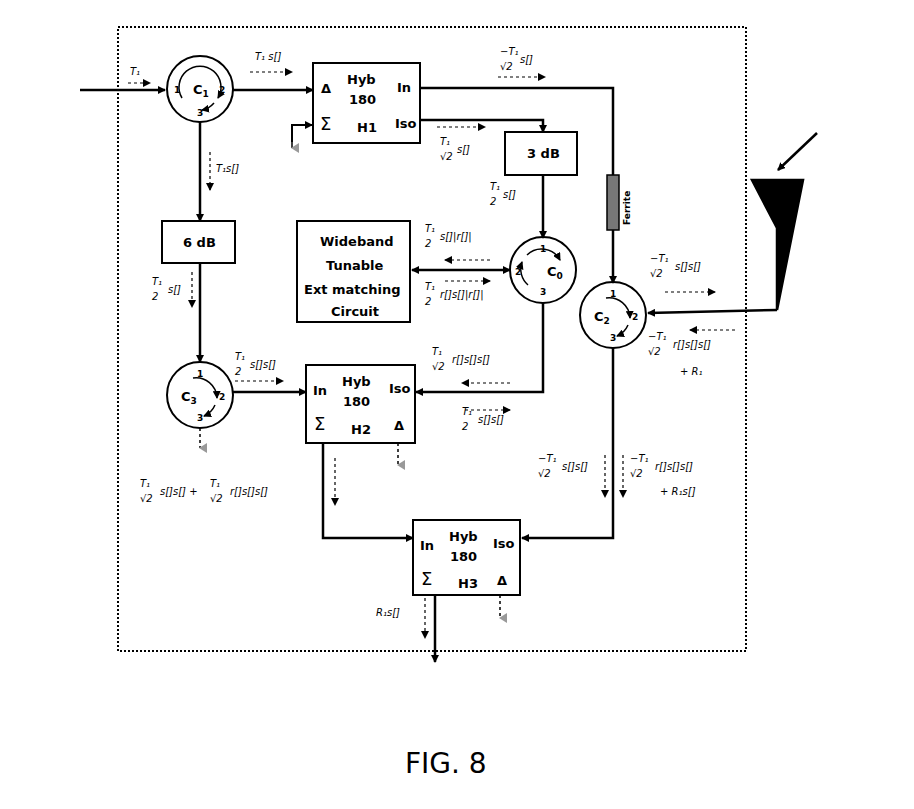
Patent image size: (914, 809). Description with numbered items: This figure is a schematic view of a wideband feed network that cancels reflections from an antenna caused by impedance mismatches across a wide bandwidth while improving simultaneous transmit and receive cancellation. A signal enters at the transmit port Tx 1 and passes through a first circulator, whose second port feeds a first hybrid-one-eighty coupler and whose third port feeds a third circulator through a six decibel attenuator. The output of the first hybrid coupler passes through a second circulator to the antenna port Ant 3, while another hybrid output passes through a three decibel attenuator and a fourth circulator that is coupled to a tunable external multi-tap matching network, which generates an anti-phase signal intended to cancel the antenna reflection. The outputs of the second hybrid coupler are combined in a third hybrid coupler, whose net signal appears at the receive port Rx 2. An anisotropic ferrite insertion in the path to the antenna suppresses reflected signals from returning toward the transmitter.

The Tx port 1 is at (91, 90).
The Rx port 2 is at (439, 645).
The antenna port 3 is at (763, 210).